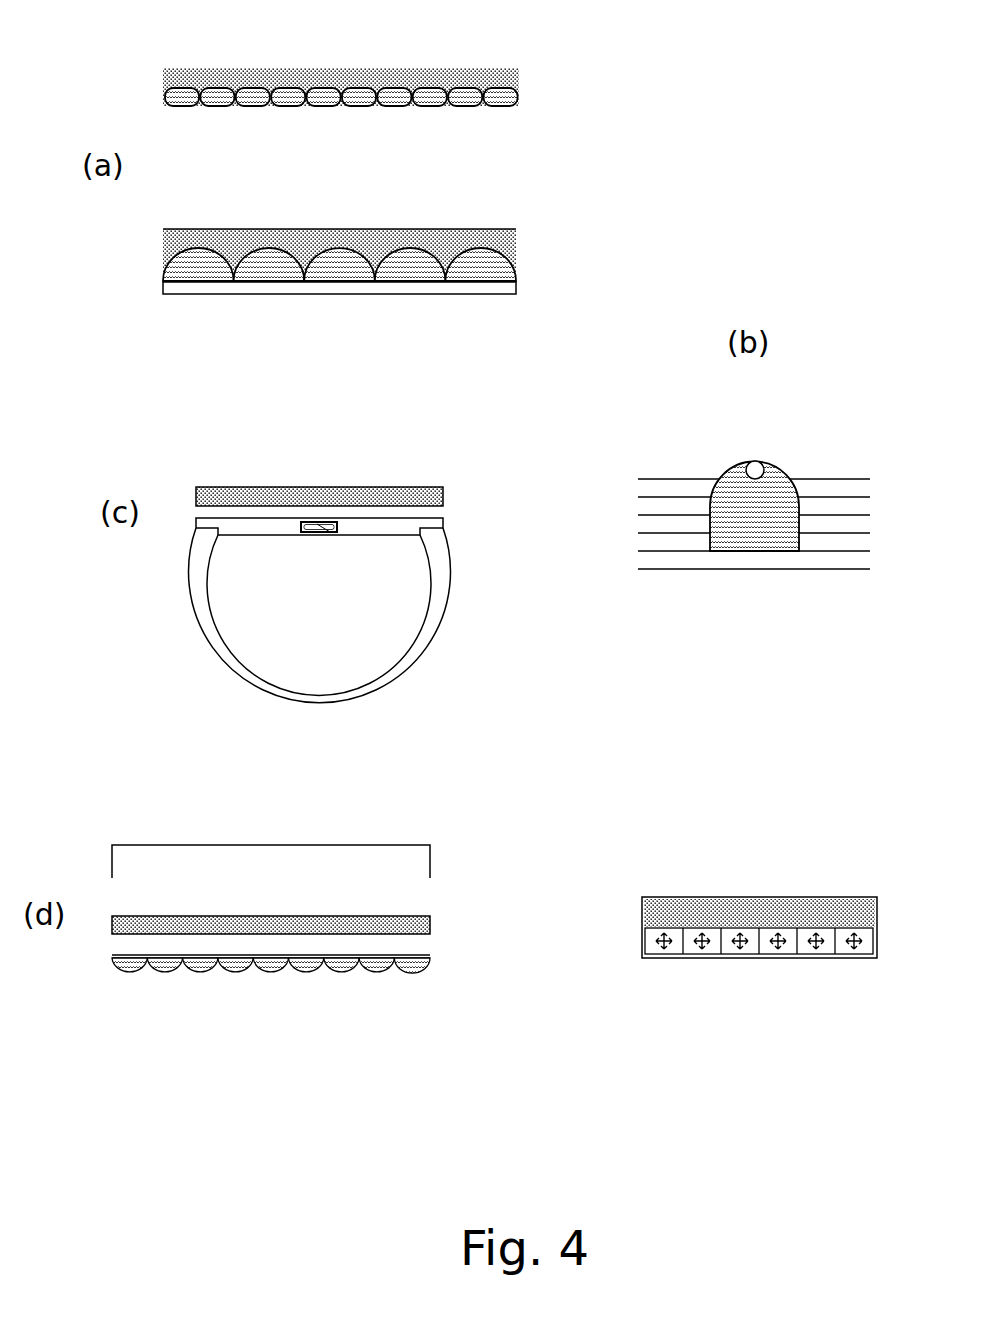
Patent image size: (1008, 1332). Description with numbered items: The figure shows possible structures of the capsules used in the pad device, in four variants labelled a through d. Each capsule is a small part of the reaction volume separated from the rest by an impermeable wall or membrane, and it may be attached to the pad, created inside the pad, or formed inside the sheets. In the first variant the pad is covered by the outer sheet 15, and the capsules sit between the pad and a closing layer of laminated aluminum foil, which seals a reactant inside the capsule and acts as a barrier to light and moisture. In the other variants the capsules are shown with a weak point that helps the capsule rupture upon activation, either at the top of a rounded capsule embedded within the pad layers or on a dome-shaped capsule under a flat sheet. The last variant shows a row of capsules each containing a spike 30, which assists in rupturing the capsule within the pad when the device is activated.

The outer sheet 15 is at (352, 241).
The spike 30 is at (747, 952).